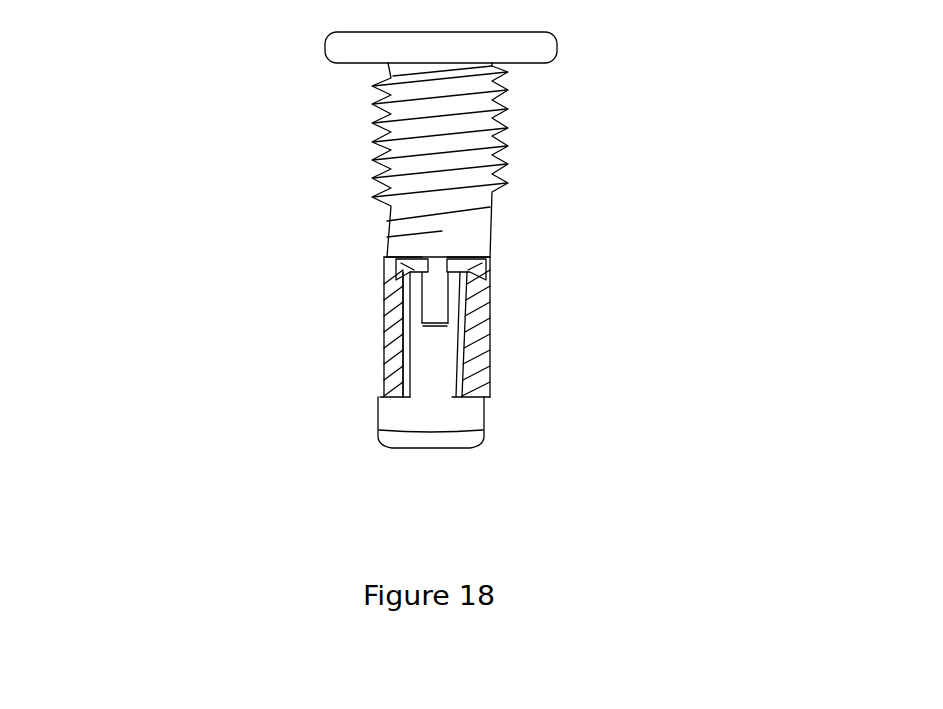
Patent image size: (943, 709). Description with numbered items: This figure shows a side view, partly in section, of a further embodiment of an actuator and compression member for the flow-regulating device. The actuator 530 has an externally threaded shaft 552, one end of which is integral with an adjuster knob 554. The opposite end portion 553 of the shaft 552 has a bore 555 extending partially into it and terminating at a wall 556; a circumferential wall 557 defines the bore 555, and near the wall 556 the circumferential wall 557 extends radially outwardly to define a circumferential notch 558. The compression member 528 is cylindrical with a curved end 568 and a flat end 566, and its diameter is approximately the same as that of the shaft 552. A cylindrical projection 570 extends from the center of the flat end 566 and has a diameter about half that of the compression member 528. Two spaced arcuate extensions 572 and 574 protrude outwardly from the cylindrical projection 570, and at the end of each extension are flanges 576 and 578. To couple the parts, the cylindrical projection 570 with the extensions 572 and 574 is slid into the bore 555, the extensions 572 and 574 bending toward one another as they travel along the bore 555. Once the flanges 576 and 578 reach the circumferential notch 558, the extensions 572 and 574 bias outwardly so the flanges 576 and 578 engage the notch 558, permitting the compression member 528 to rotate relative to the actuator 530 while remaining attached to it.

The actuator 530 is at (469, 199).
The adjuster knob 554 is at (327, 47).
The externally threaded shaft 552 is at (514, 150).
The compression member 528 is at (427, 367).
The end portion of the shaft 553 is at (438, 312).
The bore 555 is at (462, 376).
The circumferential wall 557 is at (478, 318).
The cylindrical projection 570 is at (427, 359).
The arcuate extension 572 is at (413, 297).
The arcuate extension 574 is at (453, 295).
The wall 556 is at (452, 257).
The circumferential notch 558 is at (473, 265).
The flange 576 is at (400, 257).
The flange 578 is at (489, 255).
The flat end 566 is at (382, 400).
The curved end 568 is at (395, 446).